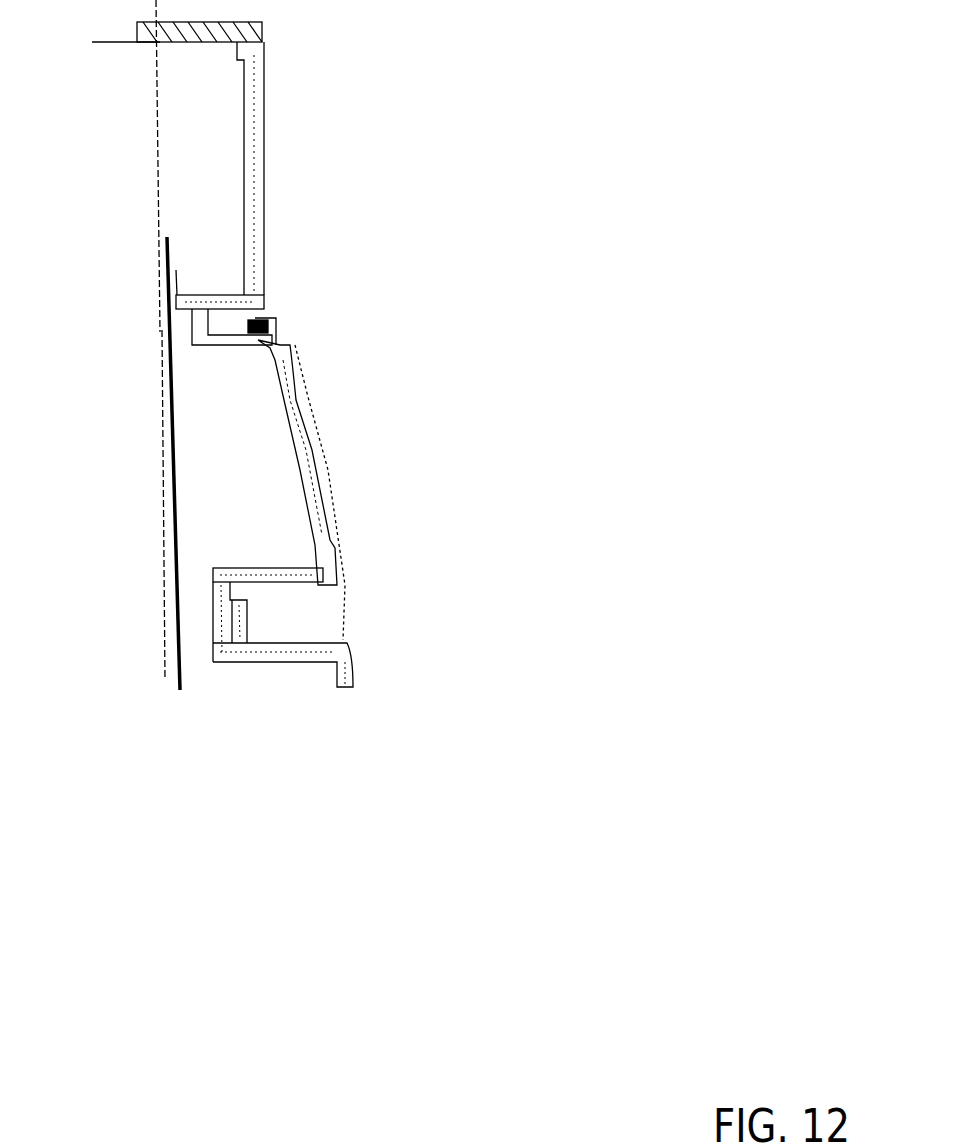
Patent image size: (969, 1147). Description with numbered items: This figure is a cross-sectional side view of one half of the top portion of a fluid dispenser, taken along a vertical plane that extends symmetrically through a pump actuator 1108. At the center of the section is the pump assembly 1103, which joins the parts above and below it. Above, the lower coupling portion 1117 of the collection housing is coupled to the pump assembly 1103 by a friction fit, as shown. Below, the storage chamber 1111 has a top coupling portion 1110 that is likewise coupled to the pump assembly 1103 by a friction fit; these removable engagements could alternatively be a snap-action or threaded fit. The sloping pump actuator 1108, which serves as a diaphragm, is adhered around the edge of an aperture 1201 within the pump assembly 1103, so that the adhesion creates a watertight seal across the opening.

The aperture 1201 is at (210, 451).
The lower coupling portion 1117 is at (218, 320).
The pump actuator 1108 is at (304, 450).
The pump assembly 1103 is at (263, 578).
The top coupling portion 1110 is at (214, 645).
The storage chamber 1111 is at (355, 668).